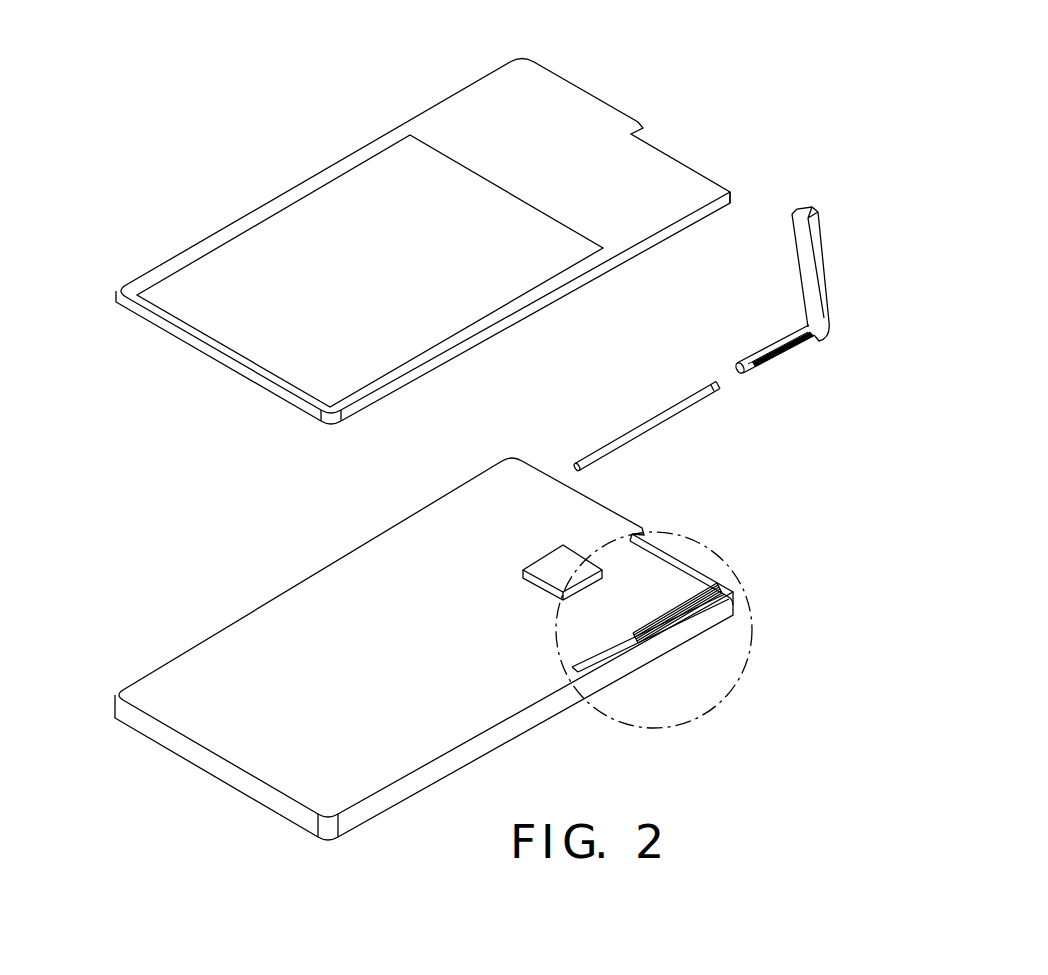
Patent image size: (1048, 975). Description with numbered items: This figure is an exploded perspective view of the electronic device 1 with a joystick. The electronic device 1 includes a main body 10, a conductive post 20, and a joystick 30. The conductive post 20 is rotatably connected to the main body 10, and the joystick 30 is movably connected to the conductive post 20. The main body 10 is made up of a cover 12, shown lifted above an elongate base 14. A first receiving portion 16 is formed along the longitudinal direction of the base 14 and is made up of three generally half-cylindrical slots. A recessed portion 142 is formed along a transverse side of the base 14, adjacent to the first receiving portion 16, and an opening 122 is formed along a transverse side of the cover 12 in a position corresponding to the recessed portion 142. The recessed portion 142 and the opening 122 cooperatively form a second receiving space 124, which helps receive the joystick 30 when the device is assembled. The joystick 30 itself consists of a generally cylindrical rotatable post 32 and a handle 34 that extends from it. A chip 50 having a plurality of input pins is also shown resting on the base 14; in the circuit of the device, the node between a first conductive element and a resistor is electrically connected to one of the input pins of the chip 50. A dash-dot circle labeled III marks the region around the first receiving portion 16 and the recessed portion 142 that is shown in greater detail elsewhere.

The electronic device 1 is at (597, 58).
The main body 10 is at (152, 449).
The cover 12 is at (302, 363).
The elongate base 14 is at (285, 625).
The first receiving portion 16 is at (705, 607).
The conductive post 20 is at (683, 408).
The joystick 30 is at (904, 258).
The rotatable post 32 is at (810, 328).
The handle 34 is at (818, 264).
The chip 50 is at (553, 570).
The opening 122 is at (723, 175).
The second receiving space 124 is at (932, 152).
The recessed portion 142 is at (692, 566).
The detail region III is at (745, 675).